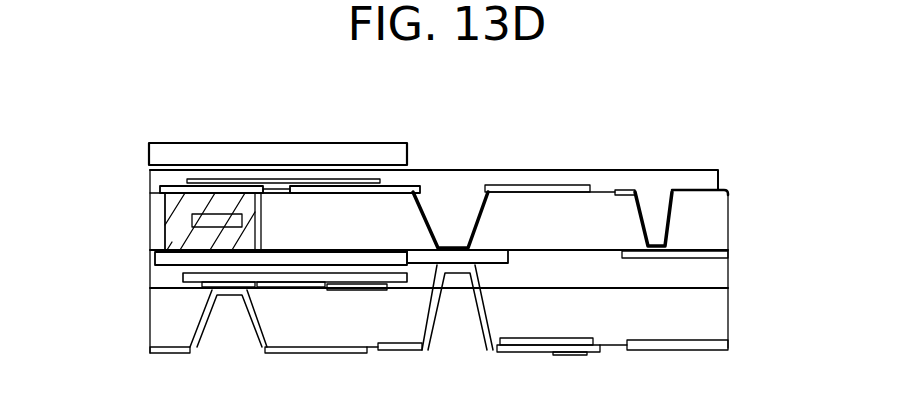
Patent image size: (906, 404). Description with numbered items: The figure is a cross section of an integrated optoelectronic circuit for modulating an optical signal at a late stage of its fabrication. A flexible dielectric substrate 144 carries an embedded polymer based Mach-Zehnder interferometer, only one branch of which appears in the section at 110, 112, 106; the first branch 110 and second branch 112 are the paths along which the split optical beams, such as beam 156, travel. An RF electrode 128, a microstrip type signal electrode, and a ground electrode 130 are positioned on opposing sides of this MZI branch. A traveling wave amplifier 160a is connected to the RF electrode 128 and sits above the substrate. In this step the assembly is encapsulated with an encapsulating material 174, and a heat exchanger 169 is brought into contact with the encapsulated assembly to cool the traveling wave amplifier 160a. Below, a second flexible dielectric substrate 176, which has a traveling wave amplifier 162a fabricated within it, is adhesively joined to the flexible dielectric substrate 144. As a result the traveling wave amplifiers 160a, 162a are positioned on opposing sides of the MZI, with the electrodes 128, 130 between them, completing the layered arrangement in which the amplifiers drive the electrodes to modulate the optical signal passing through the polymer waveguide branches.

The MZI branch 106 is at (177, 216).
The first branch 110 is at (198, 226).
The second branch 112 is at (331, 257).
The RF electrode 128 is at (160, 173).
The ground electrode 130 is at (148, 262).
The flexible dielectric substrate 144 is at (718, 232).
The beam 156 is at (712, 273).
The traveling wave amplifier 160a is at (163, 188).
The traveling wave amplifier 162a is at (283, 278).
The heat exchanger 169 is at (373, 157).
The encapsulating material 174 is at (652, 178).
The second flexible dielectric substrate 176 is at (717, 327).